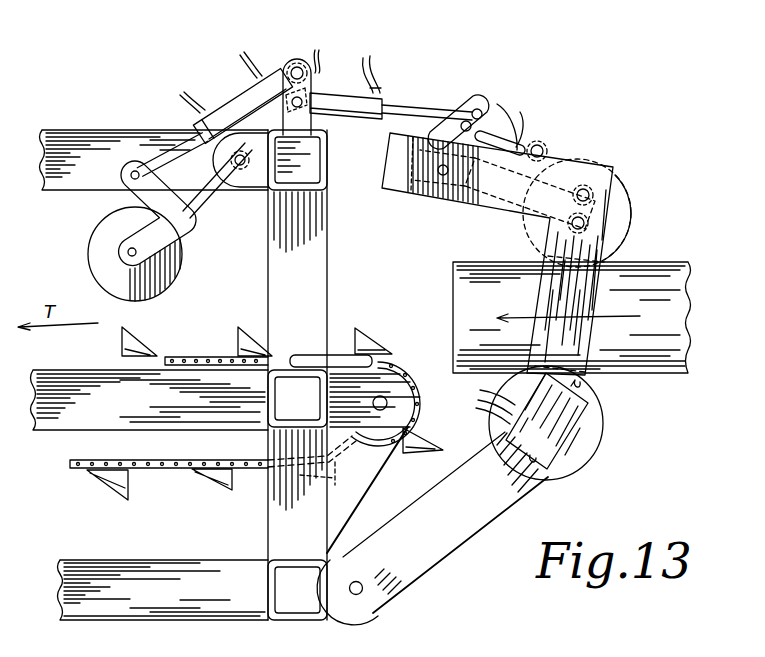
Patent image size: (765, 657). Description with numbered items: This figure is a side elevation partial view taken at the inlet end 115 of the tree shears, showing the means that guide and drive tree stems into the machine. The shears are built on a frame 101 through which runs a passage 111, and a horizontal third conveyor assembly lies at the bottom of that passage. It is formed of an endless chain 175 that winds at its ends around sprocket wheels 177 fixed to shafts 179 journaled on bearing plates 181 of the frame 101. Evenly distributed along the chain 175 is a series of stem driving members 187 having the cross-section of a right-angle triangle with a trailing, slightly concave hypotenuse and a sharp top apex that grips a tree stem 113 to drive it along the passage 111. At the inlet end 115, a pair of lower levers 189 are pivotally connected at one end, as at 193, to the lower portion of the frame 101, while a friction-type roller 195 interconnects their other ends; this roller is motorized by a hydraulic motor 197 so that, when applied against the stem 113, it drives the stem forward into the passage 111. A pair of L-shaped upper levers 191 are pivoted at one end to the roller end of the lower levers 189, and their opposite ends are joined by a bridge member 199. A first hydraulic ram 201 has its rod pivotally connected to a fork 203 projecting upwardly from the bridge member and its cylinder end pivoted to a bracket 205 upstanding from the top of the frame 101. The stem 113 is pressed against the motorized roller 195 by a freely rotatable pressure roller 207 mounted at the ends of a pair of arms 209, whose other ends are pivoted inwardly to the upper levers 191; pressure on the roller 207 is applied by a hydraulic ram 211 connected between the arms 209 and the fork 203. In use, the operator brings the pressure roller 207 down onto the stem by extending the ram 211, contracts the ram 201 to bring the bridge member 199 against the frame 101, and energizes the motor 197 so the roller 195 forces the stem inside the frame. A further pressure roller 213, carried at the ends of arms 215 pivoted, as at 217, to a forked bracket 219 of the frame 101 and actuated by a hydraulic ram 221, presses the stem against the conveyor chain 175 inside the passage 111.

The frame 101 is at (90, 108).
The passage 111 is at (236, 300).
The tree stem 113 is at (467, 294).
The inlet end 115 is at (328, 284).
The endless chain 175 is at (178, 460).
The sprocket wheels 177 is at (398, 382).
The shafts 179 is at (380, 410).
The bearing plates 181 is at (352, 488).
The stem driving members 187 is at (240, 336).
The lower levers 189 is at (432, 570).
The upper levers 191 is at (552, 158).
The pivot 193 is at (357, 596).
The roller 195 is at (600, 410).
The hydraulic motor 197 is at (547, 443).
The bridge member 199 is at (402, 147).
The hydraulic ram 201 is at (343, 95).
The fork 203 is at (480, 102).
The bracket 205 is at (297, 60).
The pressure roller 207 is at (618, 238).
The arms 209 is at (500, 197).
The hydraulic ram 211 is at (497, 143).
The pressure roller 213 is at (100, 262).
The arms 215 is at (186, 222).
The pivot 217 is at (244, 170).
The forked bracket 219 is at (267, 192).
The hydraulic ram 221 is at (226, 110).